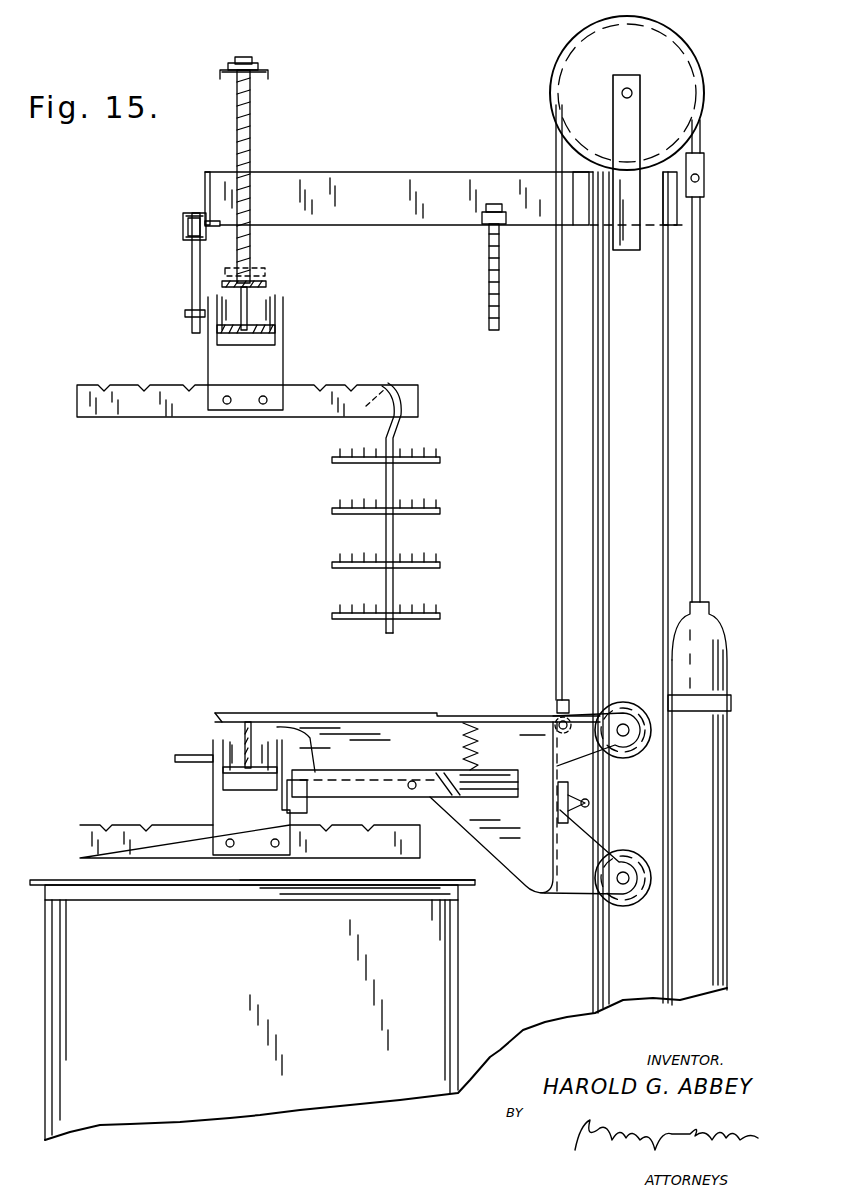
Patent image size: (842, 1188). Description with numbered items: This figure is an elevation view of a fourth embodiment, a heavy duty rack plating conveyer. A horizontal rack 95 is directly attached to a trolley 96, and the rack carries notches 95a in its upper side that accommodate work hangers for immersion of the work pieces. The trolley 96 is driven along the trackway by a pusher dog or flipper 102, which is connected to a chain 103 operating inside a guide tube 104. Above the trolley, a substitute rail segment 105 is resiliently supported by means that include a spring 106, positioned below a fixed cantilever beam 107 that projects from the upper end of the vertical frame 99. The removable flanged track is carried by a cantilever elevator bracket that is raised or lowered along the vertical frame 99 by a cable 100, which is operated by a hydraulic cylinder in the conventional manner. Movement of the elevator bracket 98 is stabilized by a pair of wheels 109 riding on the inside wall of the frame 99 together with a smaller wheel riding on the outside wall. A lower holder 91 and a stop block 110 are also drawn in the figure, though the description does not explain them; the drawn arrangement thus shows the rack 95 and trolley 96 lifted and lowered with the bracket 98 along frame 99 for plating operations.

The lower tool holder clamp 91 is at (248, 744).
The horizontal rack 95 is at (296, 405).
The notches 95a is at (348, 386).
The trolley 96 is at (255, 362).
The elevator bracket 98 is at (526, 714).
The vertical frame 99 is at (597, 930).
The cable 100 is at (556, 523).
The pusher dog or flipper 102 is at (192, 270).
The chain 103 is at (188, 222).
The guide tube 104 is at (185, 233).
The substitute rail segment 105 is at (262, 294).
The spring 106 is at (250, 126).
The fixed cantilever beam 107 is at (362, 186).
The wheels 109 is at (630, 703).
The stop block 110 is at (590, 791).